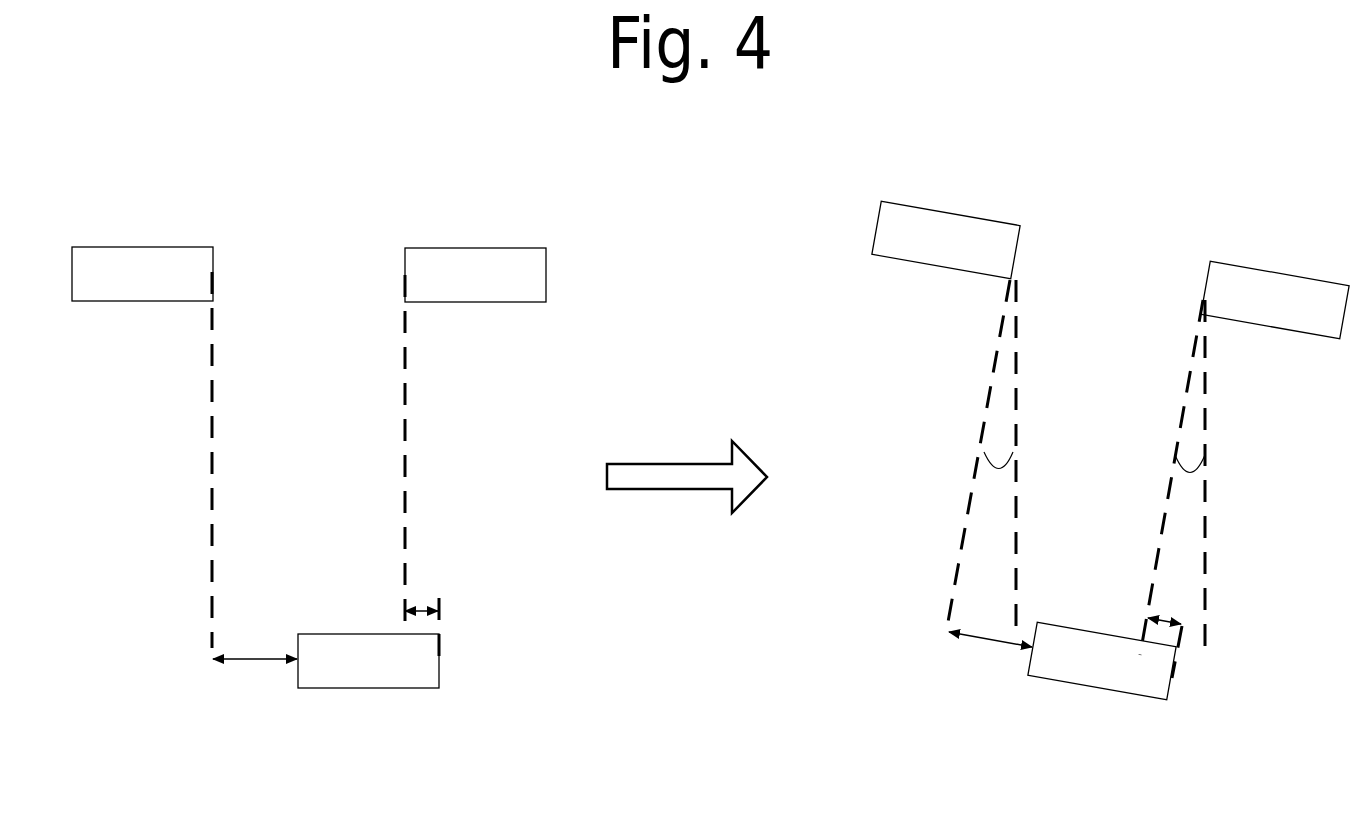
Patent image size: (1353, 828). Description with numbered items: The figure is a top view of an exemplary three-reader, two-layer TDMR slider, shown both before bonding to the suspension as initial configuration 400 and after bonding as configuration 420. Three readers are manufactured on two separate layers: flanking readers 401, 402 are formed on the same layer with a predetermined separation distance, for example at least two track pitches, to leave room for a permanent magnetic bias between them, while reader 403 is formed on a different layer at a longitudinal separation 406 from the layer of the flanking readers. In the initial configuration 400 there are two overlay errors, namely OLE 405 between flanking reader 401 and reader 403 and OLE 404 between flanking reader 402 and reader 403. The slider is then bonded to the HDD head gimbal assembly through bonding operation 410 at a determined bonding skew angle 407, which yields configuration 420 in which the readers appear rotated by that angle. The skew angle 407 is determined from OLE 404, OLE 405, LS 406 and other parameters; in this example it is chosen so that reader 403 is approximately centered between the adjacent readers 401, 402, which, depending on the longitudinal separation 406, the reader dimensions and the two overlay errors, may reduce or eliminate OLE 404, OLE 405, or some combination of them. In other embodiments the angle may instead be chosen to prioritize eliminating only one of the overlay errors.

The initial slider configuration 400 is at (297, 188).
The flanking reader 401 is at (546, 251).
The flanking reader 402 is at (877, 293).
The reader 403 is at (737, 661).
The overlay error OLE 404 is at (421, 612).
The overlay error OLE 405 is at (262, 660).
The longitudinal separation LS 406 is at (210, 475).
The bonding skew angle 407 is at (1018, 433).
The bonding operation 410 is at (684, 433).
The bonded slider configuration 420 is at (1160, 190).